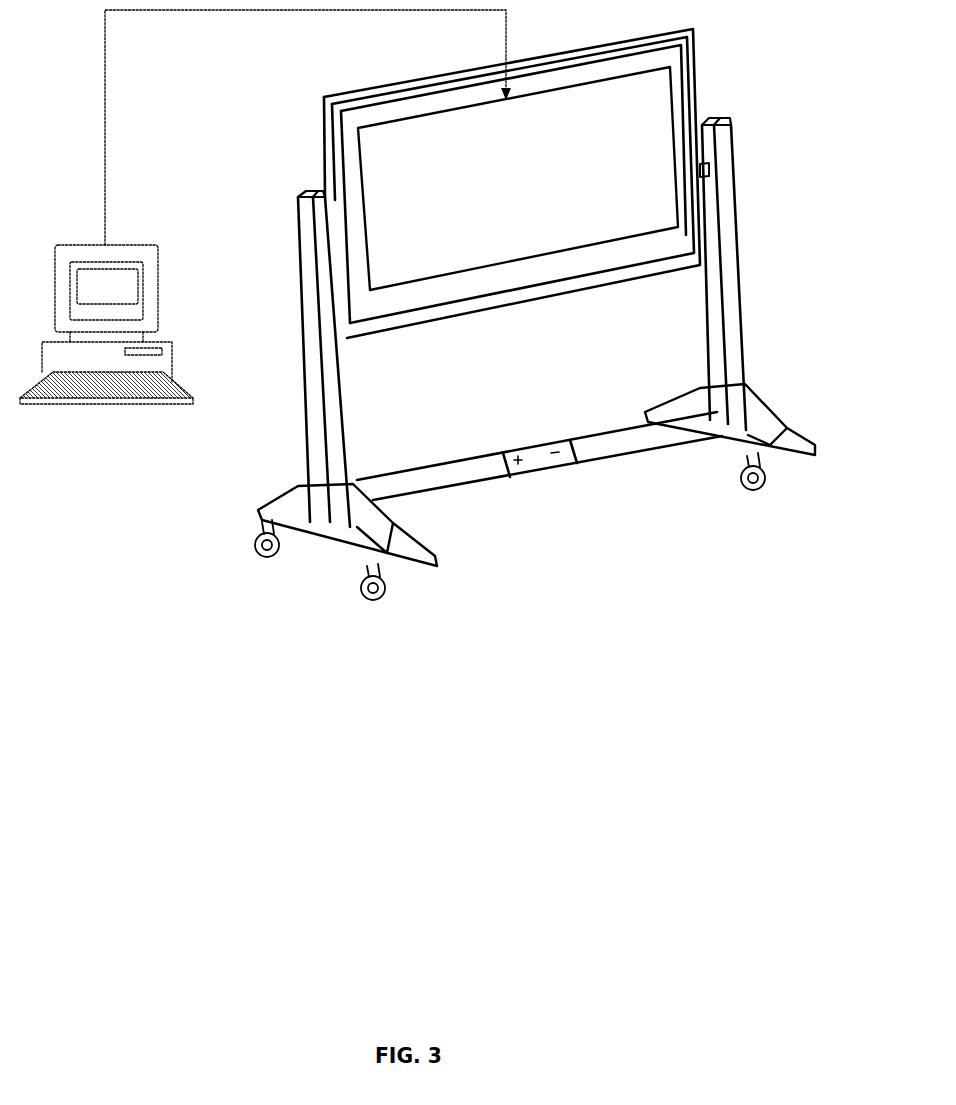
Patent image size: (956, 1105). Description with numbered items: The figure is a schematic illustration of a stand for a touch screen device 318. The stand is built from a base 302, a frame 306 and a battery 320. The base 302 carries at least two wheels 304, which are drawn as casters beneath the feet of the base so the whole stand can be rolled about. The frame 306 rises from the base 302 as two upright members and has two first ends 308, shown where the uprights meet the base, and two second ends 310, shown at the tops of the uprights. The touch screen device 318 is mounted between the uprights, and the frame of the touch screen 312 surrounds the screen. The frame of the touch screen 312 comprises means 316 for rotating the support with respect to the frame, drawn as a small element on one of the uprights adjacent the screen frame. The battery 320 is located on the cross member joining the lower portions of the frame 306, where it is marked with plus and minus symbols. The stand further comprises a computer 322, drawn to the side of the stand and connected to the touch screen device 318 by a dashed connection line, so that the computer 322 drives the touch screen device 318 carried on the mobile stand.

The base 302 is at (792, 453).
The wheels 304 is at (268, 558).
The frame 306 is at (746, 292).
The first ends 308 is at (322, 468).
The second ends 310 is at (298, 197).
The frame of the touch screen 312 is at (325, 110).
The means for rotating the support with respect to the frame 316 is at (712, 178).
The touch screen device 318 is at (678, 91).
The battery 320 is at (540, 477).
The computer 322 is at (115, 404).